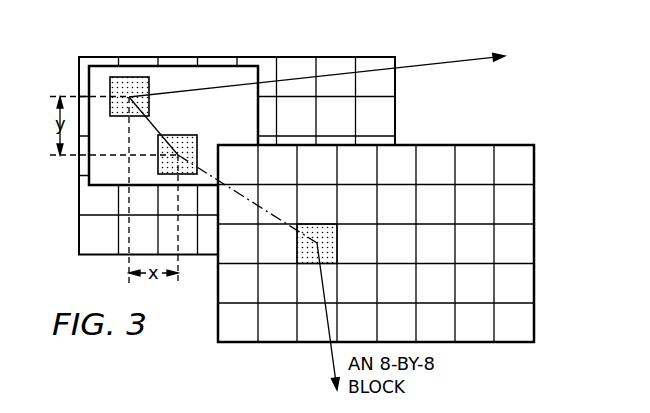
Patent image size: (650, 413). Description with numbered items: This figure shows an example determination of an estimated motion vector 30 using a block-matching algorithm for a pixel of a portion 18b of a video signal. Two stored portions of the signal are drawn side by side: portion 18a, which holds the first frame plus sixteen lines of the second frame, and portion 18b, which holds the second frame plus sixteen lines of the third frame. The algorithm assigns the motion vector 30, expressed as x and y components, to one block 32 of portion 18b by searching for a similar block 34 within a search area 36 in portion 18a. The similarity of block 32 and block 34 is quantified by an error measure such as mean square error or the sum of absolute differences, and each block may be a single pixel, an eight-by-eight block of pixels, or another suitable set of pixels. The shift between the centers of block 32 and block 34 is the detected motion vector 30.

The portion 18a is at (79, 196).
The portion 18b is at (534, 245).
The estimated motion vector 30 is at (240, 122).
The block 32 is at (318, 222).
The similar block 34 is at (133, 77).
The search area 36 is at (443, 60).